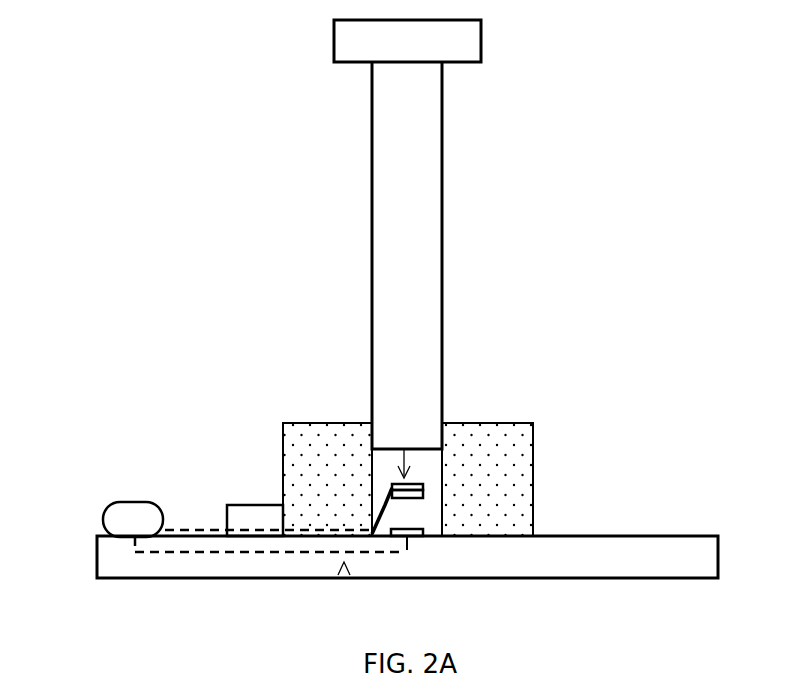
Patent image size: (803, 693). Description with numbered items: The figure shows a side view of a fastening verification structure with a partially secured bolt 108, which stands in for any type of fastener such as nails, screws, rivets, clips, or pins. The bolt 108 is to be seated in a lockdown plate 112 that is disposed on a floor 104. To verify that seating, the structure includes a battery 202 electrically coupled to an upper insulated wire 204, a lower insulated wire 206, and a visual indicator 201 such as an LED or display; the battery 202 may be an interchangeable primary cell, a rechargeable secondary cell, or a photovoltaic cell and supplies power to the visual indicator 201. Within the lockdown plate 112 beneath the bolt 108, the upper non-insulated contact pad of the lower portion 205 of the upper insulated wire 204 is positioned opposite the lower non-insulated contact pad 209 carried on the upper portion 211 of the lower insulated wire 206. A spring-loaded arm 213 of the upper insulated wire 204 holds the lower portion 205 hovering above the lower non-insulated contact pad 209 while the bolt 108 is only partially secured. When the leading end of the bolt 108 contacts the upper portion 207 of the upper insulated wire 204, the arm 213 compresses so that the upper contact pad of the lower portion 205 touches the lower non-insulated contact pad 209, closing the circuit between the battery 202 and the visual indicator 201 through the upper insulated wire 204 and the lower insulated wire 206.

The floor 104 is at (97, 560).
The bolt 108 is at (443, 147).
The lockdown plate 112 is at (452, 423).
The visual indicator 201 is at (105, 510).
The battery 202 is at (250, 505).
The upper insulated wire 204 is at (408, 450).
The lower portion of upper insulated wire 205 is at (424, 495).
The lower insulated wire 206 is at (344, 572).
The upper portion of upper insulated wire 207 is at (418, 484).
The lower non-insulated contact pad 209 is at (410, 529).
The upper portion of lower insulated wire 211 is at (407, 540).
The arm 213 is at (388, 484).